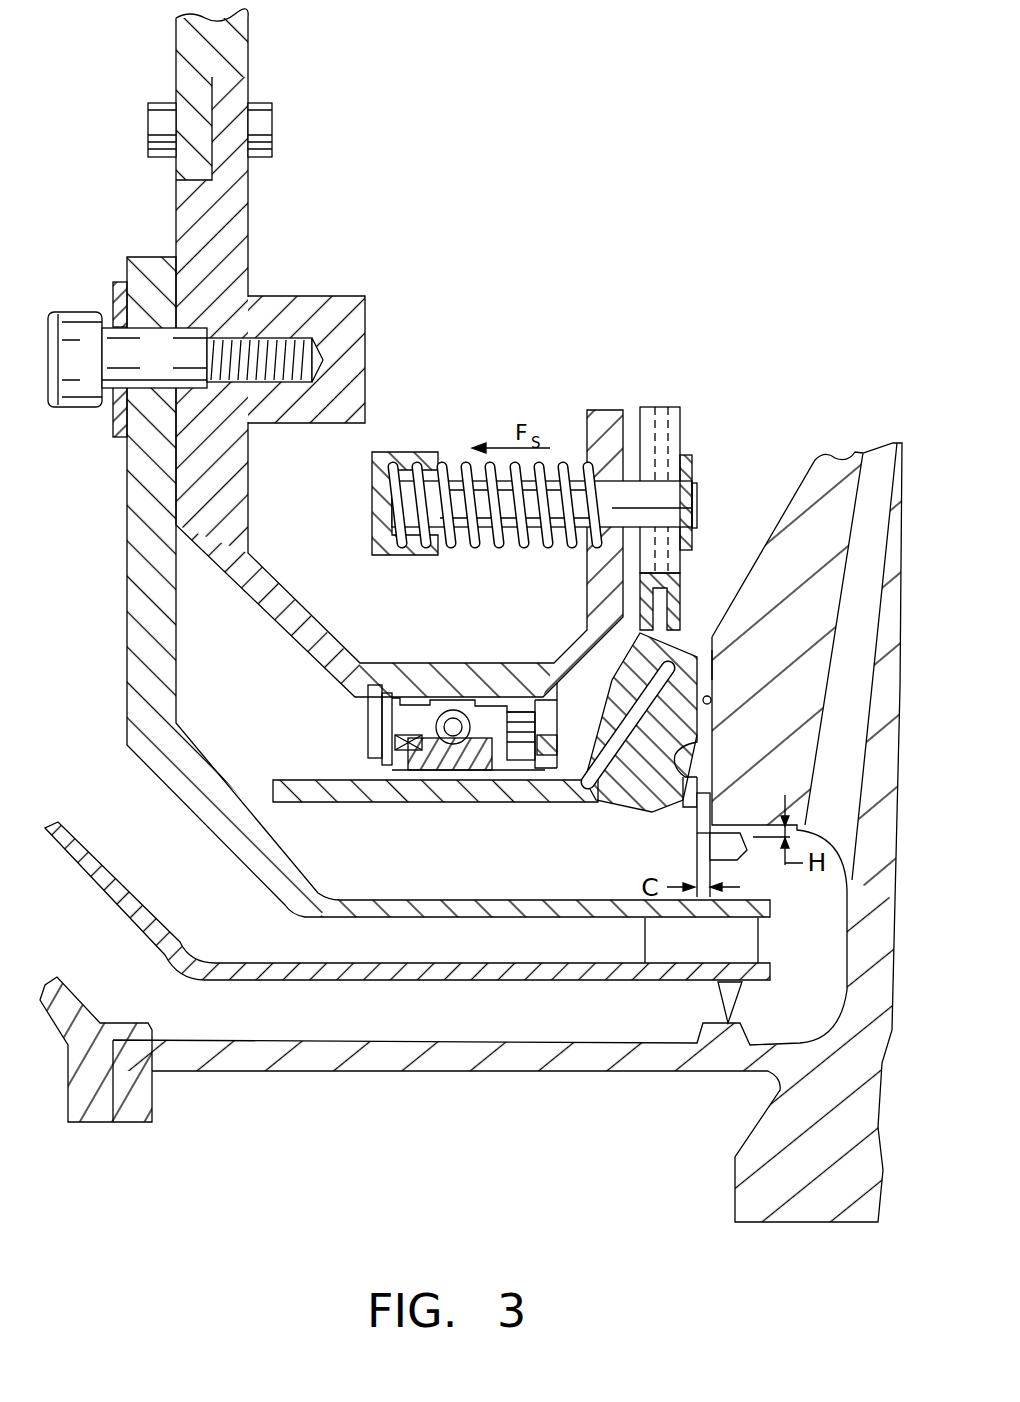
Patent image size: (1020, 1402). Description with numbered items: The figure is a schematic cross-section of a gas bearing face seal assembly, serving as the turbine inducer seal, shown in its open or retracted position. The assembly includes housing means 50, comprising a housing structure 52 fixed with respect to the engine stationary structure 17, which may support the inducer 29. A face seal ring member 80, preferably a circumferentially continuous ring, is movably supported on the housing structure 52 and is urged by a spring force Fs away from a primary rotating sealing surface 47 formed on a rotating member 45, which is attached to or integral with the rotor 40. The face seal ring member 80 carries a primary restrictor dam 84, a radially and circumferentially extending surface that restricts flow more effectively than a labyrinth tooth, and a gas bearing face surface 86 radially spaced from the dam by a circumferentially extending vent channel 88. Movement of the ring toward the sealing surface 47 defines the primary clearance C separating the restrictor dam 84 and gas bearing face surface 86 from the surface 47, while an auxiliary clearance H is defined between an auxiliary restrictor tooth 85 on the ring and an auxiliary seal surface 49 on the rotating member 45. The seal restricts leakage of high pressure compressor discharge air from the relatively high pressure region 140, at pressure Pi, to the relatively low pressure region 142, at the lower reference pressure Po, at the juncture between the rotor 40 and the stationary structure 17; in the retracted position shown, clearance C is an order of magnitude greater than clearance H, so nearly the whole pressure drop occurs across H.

The engine stationary structure 17 is at (246, 40).
The housing structure 52 is at (246, 196).
The housing means 50 is at (360, 282).
The relatively low pressure region 142 is at (660, 275).
The relatively high pressure region 140 is at (410, 885).
The rotating member 45 is at (807, 661).
The gas bearing face surface 86 is at (714, 668).
The primary rotating sealing surface 47 is at (713, 695).
The vent channel 88 is at (680, 753).
The primary restrictor dam 84 is at (713, 796).
The auxiliary seal surface 49 is at (723, 820).
The auxiliary restrictor tooth 85 is at (740, 838).
The face seal ring member 80 is at (638, 852).
The inducer 29 is at (686, 951).
The rotor 40 is at (750, 1195).